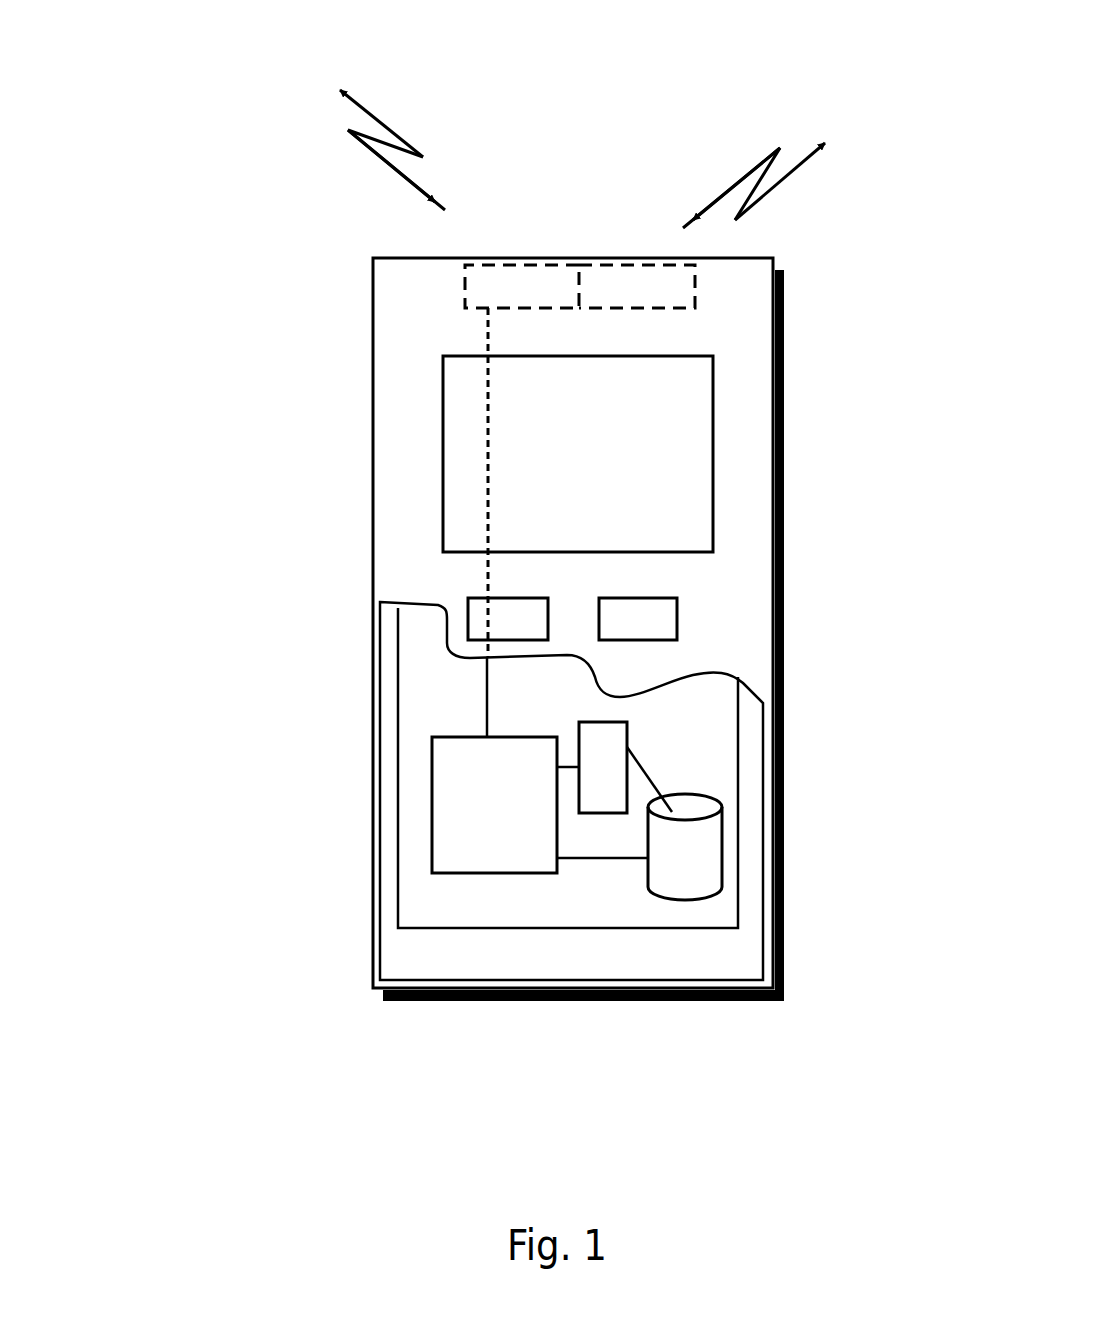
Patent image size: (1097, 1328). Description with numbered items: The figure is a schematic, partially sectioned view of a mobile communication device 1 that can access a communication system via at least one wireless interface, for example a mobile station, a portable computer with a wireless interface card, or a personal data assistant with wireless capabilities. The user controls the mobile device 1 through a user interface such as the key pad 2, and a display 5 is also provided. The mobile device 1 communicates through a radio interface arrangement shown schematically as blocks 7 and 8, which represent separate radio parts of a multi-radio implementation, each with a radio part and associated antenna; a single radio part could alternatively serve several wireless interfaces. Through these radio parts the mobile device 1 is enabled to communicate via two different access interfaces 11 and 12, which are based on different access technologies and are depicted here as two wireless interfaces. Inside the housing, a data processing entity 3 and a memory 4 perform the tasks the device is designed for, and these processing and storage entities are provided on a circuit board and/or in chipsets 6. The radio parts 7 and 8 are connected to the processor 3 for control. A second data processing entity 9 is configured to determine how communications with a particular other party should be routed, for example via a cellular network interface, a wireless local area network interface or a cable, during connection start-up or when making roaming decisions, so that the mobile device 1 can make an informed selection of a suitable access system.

The mobile communication device 1 is at (373, 319).
The key pad 2 is at (467, 607).
The data processing entity 3 is at (460, 797).
The memory 4 is at (657, 858).
The display 5 is at (467, 433).
The circuit board and/or chipsets 6 is at (433, 903).
The radio part 7 is at (513, 285).
The radio part 8 is at (668, 283).
The second data processing entity 9 is at (603, 743).
The first access interface 11 is at (407, 140).
The second access interface 12 is at (740, 178).